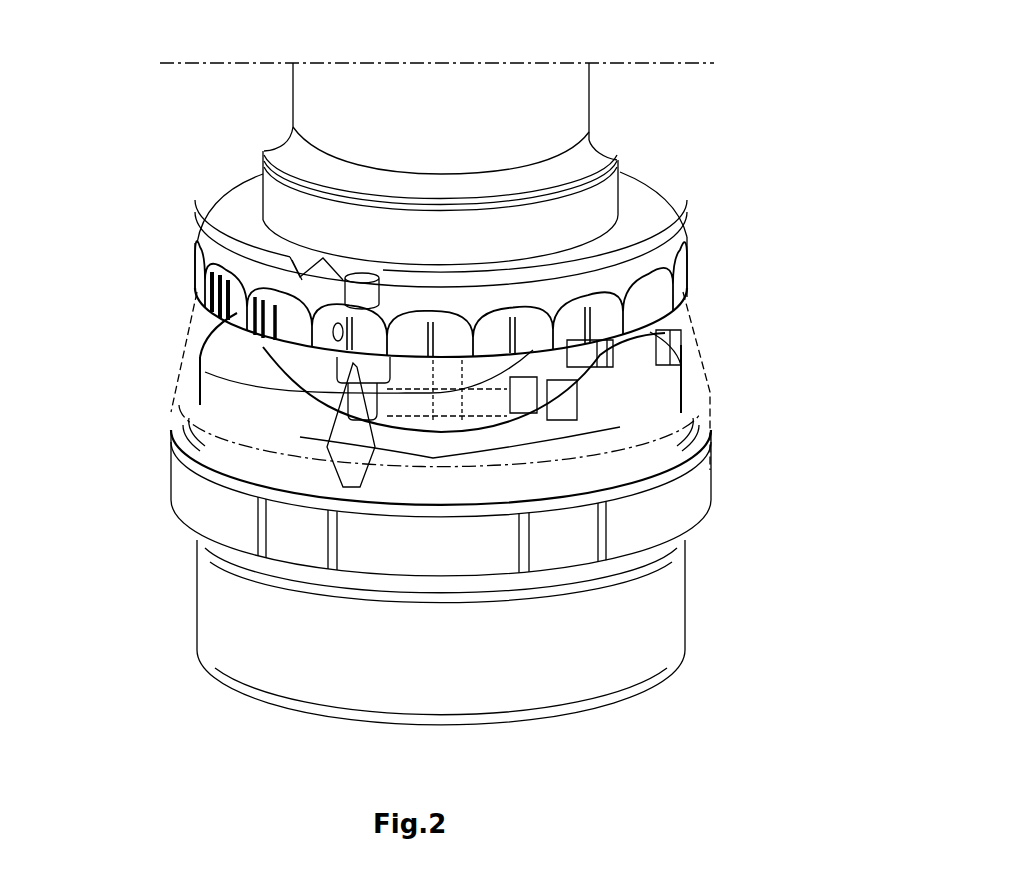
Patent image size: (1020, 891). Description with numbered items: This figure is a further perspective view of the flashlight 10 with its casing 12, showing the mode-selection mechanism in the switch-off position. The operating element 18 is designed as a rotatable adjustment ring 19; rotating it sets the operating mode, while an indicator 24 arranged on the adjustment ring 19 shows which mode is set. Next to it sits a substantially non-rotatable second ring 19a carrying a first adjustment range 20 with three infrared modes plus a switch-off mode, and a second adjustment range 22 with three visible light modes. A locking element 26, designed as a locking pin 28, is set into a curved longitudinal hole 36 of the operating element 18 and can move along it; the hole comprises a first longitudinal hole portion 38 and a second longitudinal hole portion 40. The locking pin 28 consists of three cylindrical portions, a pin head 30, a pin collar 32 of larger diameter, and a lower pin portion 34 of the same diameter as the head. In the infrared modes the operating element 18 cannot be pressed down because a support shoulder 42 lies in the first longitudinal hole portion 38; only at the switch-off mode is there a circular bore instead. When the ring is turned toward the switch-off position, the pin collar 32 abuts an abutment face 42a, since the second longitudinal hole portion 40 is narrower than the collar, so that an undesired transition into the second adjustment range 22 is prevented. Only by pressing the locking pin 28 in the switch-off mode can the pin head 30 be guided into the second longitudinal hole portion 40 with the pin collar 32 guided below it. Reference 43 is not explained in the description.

The flashlight 10 is at (766, 193).
The casing 12 is at (533, 103).
The operating element 18 is at (178, 336).
The adjustment ring 19 is at (190, 354).
The second ring 19a is at (215, 205).
The first adjustment range 20 is at (236, 213).
The second adjustment range 22 is at (517, 258).
The indicator 24 is at (422, 373).
The locking element 26 is at (371, 260).
The locking pin 28 is at (222, 337).
The pin head 30 is at (357, 293).
The pin collar 32 is at (325, 358).
The lower pin portion 34 is at (190, 427).
The curved longitudinal hole 36 is at (243, 473).
The first longitudinal hole portion 38 is at (435, 460).
The second longitudinal hole portion 40 is at (700, 390).
The support shoulder 42 is at (330, 403).
The abutment face 42a is at (675, 318).
The guide block 43 is at (470, 420).